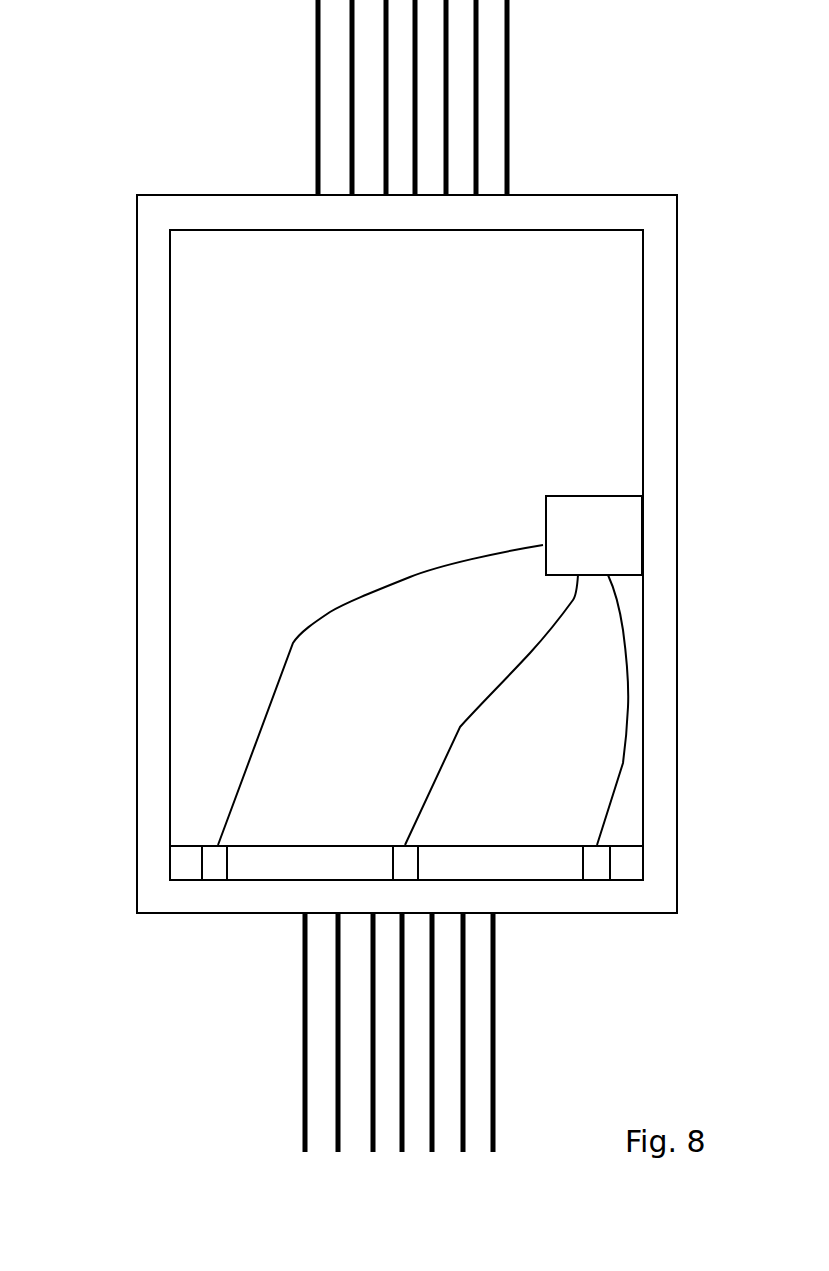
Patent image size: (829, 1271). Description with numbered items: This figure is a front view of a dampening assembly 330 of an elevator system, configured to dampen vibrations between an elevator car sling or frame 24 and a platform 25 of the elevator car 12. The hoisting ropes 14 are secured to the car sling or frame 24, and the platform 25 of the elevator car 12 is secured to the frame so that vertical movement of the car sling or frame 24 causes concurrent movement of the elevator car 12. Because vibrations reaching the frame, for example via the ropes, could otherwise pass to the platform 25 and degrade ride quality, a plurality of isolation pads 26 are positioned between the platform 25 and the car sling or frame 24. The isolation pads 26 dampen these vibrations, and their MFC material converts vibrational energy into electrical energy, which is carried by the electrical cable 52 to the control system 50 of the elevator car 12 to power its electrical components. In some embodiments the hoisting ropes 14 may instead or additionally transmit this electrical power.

The hoisting ropes 14 is at (510, 77).
The car sling or frame 24 is at (150, 403).
The elevator car 12 is at (205, 678).
The platform 25 is at (508, 842).
The isolation pads 26 is at (218, 868).
The dampening assembly 330 is at (185, 863).
The control system 50 is at (570, 496).
The electrical cable 52 is at (530, 653).